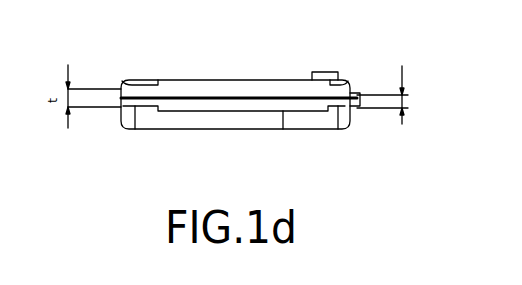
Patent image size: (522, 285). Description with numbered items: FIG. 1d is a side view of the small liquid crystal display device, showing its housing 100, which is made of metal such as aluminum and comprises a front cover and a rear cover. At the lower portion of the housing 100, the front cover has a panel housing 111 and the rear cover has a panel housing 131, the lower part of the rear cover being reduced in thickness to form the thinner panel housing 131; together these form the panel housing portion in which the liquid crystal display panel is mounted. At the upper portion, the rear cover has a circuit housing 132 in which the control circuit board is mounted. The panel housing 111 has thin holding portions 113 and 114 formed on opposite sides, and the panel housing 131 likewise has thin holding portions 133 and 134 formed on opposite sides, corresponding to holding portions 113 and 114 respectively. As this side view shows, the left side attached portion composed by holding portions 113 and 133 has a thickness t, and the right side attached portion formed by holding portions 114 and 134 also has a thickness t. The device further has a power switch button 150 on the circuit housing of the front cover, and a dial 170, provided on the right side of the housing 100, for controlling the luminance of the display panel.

The housing 100 is at (172, 78).
The panel housing 111 is at (203, 95).
The thin holding portion 113 is at (128, 79).
The thin holding portion 114 is at (355, 92).
The panel housing 131 is at (283, 129).
The circuit housing 132 is at (196, 130).
The thin holding portion 133 is at (135, 129).
The thin holding portion 134 is at (338, 129).
The power switch button 150 is at (330, 71).
The dial 170 is at (403, 67).